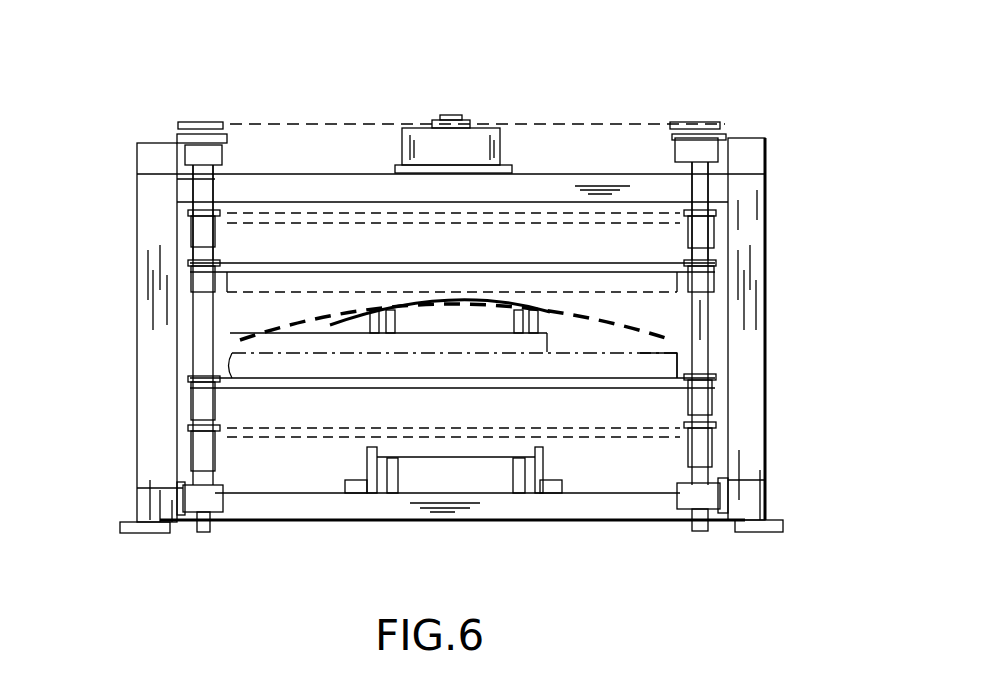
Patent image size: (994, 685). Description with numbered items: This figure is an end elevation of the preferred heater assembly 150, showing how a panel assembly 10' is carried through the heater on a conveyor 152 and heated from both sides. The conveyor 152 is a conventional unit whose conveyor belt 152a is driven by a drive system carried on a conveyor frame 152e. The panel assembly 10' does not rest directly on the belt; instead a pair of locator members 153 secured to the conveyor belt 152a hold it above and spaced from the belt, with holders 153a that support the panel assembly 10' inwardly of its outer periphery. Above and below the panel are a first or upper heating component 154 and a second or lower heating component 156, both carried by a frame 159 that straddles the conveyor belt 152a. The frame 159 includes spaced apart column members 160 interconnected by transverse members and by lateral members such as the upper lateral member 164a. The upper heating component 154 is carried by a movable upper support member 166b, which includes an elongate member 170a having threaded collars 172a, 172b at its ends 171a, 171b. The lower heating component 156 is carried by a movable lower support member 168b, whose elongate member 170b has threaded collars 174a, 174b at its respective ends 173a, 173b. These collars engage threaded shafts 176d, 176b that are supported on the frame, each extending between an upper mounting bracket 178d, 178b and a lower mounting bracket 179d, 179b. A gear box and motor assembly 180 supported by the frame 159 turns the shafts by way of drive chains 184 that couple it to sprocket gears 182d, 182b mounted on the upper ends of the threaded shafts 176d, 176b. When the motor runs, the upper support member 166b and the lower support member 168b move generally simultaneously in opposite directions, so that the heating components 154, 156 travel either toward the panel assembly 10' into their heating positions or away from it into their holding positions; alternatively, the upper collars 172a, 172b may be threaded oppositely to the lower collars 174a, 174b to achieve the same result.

The panel assembly 10' is at (456, 289).
The heater assembly 150 is at (580, 73).
The conveyor 152 is at (356, 340).
The conveyor belt 152a is at (430, 332).
The conveyor frame 152e is at (520, 505).
The locator members 153 is at (372, 314).
The holders 153a is at (402, 328).
The upper heating component 154 is at (720, 322).
The lower heating component 156 is at (683, 363).
The frame 159 is at (134, 416).
The column members 160 is at (153, 368).
The upper lateral member 164a is at (230, 167).
The upper support member 166b is at (452, 255).
The lower support member 168b is at (448, 368).
The elongate member 170a is at (455, 262).
The elongate member 170b is at (280, 393).
The end 171a is at (322, 168).
The end 171b is at (683, 262).
The threaded collar 172a is at (197, 237).
The threaded collar 172b is at (710, 232).
The end 173a is at (230, 370).
The end 173b is at (680, 368).
The threaded collar 174a is at (190, 450).
The threaded collar 174b is at (709, 450).
The threaded shaft 176d is at (270, 184).
The threaded shaft 176b is at (707, 187).
The upper mounting bracket 178d is at (218, 122).
The upper mounting bracket 178b is at (714, 125).
The lower mounting bracket 179d is at (193, 502).
The lower mounting bracket 179b is at (724, 540).
The gear box and motor assembly 180 is at (480, 118).
The sprocket gear 182d is at (178, 127).
The sprocket gear 182b is at (720, 126).
The drive chains 184 is at (337, 152).